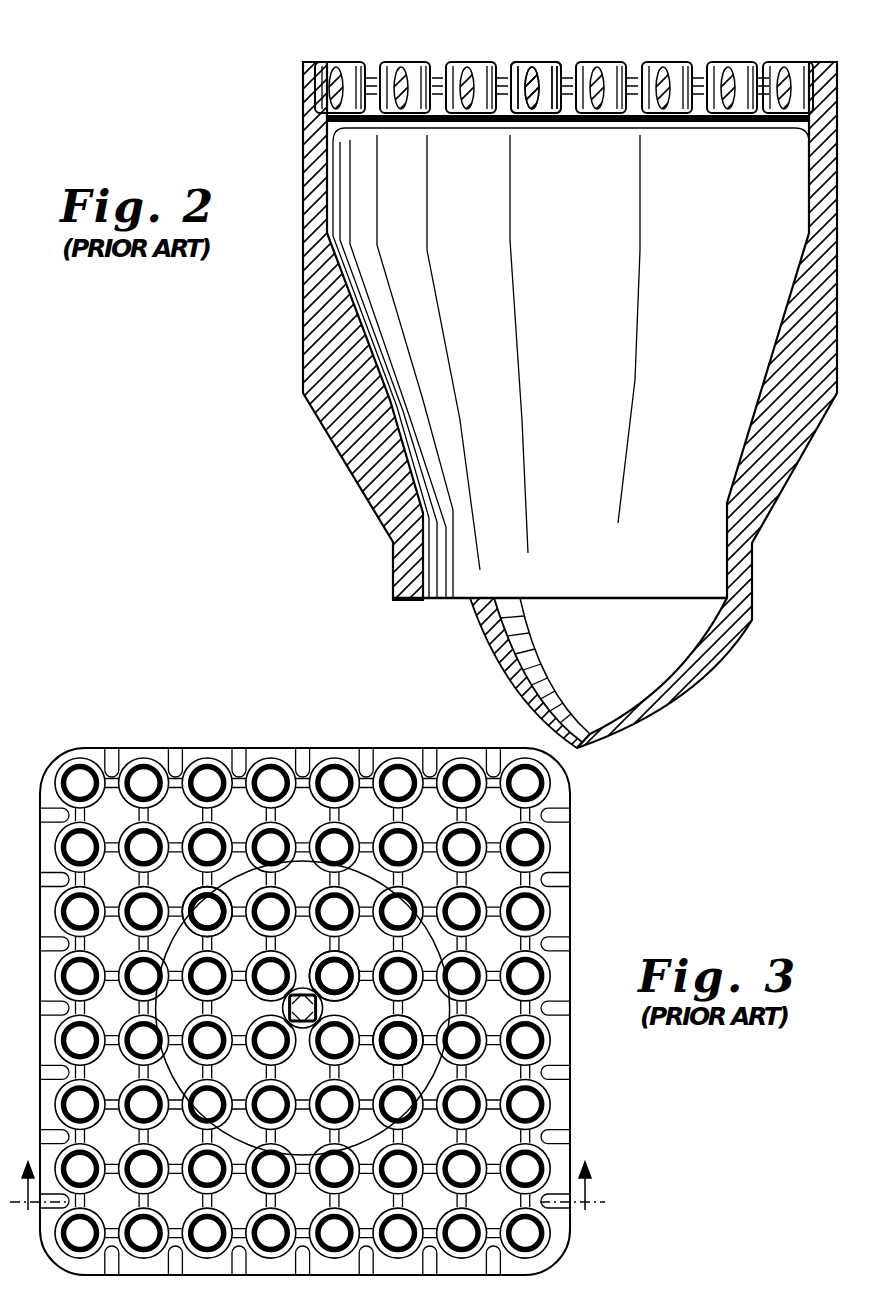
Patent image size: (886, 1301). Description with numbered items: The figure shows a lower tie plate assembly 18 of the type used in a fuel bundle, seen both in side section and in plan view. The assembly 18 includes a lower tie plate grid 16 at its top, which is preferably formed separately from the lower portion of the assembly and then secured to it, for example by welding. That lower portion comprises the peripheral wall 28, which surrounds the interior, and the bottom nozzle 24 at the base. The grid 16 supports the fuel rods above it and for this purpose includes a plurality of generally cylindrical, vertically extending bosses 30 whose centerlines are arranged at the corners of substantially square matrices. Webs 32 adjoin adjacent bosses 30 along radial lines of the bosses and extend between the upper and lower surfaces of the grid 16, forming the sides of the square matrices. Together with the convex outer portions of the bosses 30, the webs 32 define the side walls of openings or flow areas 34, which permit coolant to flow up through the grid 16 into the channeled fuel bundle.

In FIG. 2, the lower tie plate grid 16 is at (766, 54).
In FIG. 3, the lower tie plate grid 16 is at (313, 757).
In FIG. 2, the lower tie plate assembly 18 is at (266, 157).
In FIG. 2, the bottom nozzle 24 is at (618, 673).
In FIG. 2, the peripheral wall 28 is at (305, 373).
In FIG. 2, the cylindrical bosses 30 is at (517, 108).
In FIG. 3, the cylindrical bosses 30 is at (378, 1032).
In FIG. 2, the webs 32 is at (655, 92).
In FIG. 3, the webs 32 is at (236, 912).
In FIG. 3, the flow areas 34 is at (302, 870).